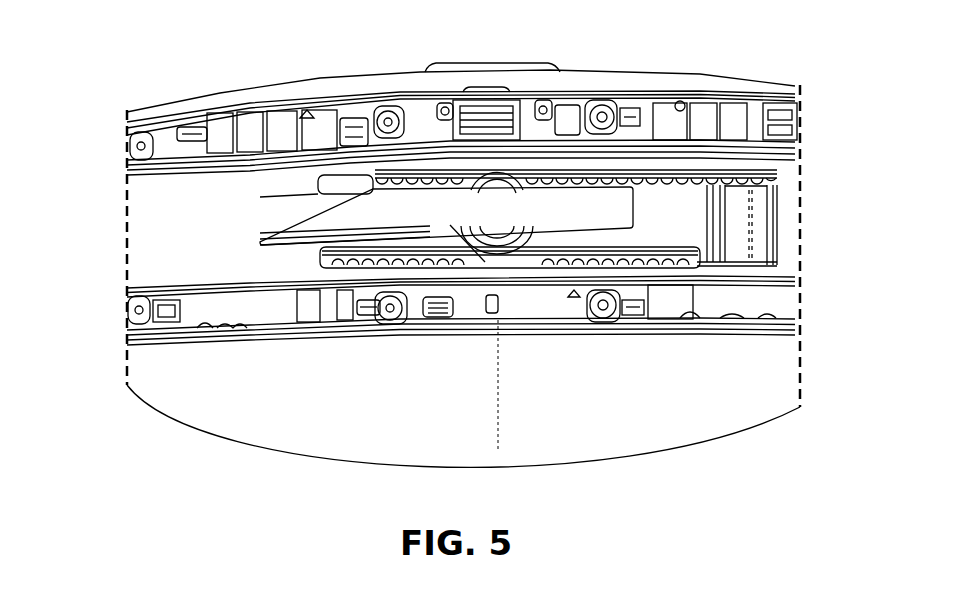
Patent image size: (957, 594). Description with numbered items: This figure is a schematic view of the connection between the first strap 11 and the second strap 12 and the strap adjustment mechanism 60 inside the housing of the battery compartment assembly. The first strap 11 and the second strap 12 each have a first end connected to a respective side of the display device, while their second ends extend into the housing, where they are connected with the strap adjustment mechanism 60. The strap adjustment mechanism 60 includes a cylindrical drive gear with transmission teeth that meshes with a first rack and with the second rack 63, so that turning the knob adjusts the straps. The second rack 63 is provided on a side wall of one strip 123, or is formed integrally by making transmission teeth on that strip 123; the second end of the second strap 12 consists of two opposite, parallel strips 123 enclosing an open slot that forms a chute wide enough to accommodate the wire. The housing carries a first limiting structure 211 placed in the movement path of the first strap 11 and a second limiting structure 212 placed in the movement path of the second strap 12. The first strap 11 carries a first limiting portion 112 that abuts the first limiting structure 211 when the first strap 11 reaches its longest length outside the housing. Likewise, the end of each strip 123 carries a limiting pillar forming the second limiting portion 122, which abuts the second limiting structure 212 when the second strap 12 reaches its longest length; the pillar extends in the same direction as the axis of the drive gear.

The first strap 11 is at (132, 250).
The second strap 12 is at (788, 250).
The first limiting portion 112 is at (718, 213).
The second limiting portion 122 is at (372, 170).
The strips 123 is at (568, 163).
The second limiting structure 212 is at (490, 173).
The second rack 63 is at (642, 181).
The strap adjustment mechanism 60 is at (316, 230).
The first limiting structure 211 is at (545, 226).